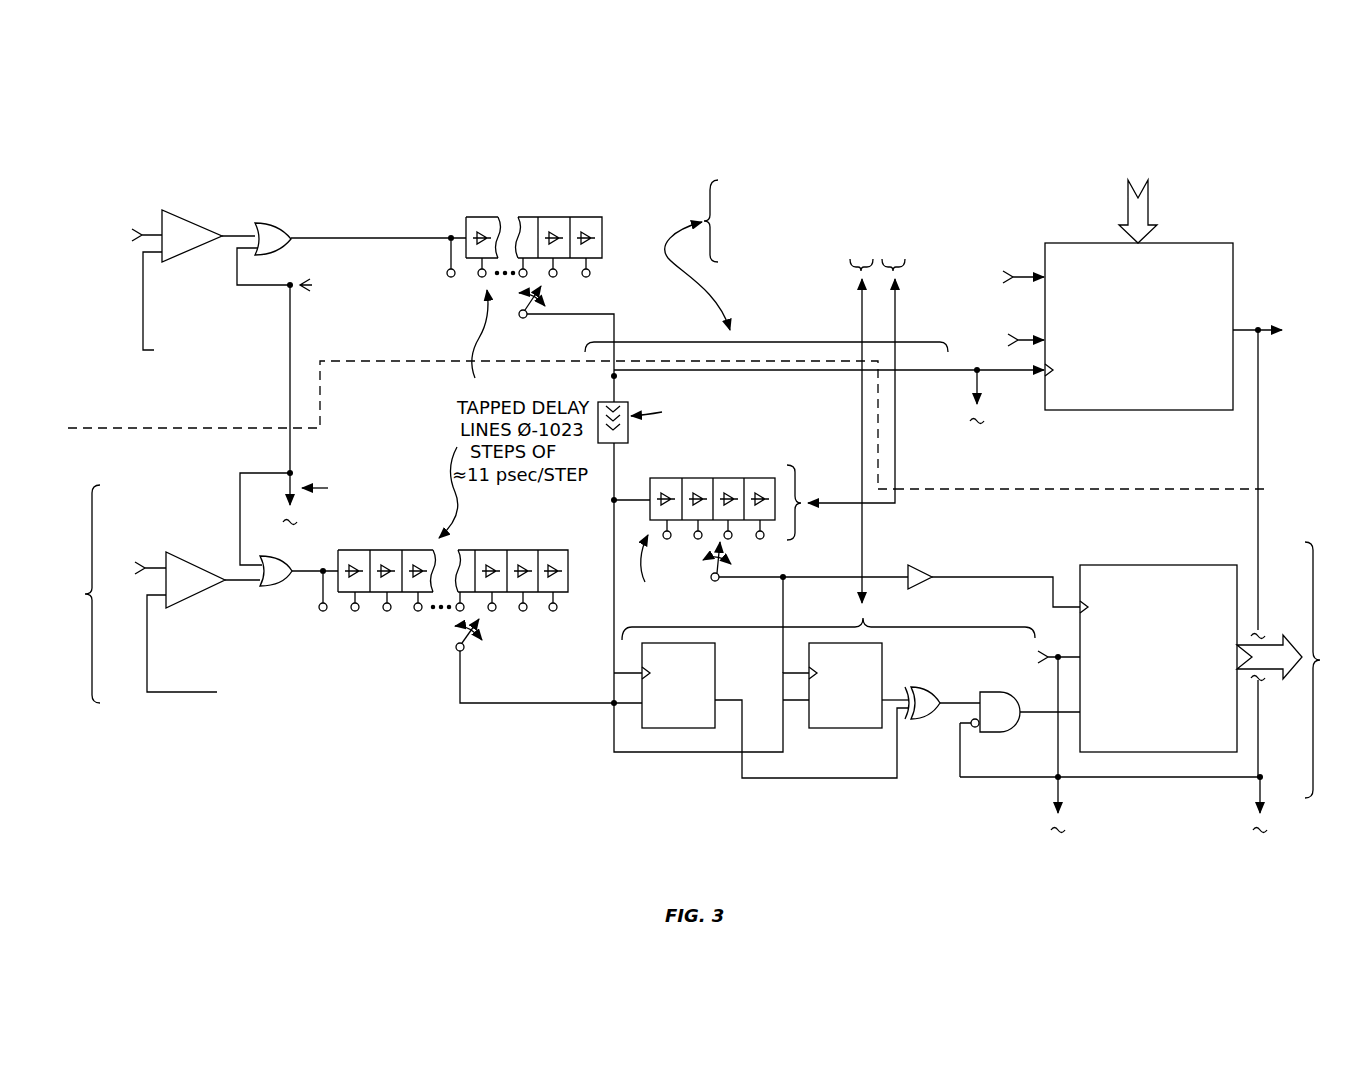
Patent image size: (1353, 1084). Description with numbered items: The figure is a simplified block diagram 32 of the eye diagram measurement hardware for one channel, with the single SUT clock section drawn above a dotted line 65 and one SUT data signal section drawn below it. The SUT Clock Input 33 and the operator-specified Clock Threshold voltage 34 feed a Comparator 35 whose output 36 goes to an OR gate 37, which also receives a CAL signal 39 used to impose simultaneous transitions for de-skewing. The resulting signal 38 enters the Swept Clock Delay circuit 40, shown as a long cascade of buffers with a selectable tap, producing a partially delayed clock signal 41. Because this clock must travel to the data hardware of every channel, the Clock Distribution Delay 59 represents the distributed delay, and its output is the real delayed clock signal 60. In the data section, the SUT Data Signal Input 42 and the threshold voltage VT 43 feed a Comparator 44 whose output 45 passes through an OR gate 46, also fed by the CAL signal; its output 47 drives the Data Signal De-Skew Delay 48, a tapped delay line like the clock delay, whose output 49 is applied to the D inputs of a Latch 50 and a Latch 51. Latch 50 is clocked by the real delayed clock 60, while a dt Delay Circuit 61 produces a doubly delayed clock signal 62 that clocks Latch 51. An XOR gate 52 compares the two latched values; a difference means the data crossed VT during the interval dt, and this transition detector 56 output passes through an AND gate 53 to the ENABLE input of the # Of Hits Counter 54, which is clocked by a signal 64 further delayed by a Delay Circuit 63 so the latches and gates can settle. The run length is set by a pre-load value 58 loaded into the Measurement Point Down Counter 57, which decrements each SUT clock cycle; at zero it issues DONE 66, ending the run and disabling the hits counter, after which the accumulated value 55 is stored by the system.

The simplified block diagram 32 is at (850, 146).
The SUT Clock Input 33 is at (121, 203).
The Clock Threshold voltage 34 is at (143, 300).
The Comparator 35 is at (193, 222).
The comparator output 36 is at (242, 235).
The OR gate 37 is at (273, 223).
The OR gate output signal 38 is at (333, 238).
The CAL signal 39 is at (290, 325).
The Swept Clock Delay circuit 40 is at (575, 209).
The partially delayed clock signal 41 is at (564, 316).
The SUT Data Signal Input 42 is at (152, 568).
The data threshold voltage VT 43 is at (147, 645).
The Comparator 44 is at (212, 572).
The comparator output 45 is at (232, 583).
The OR gate 46 is at (268, 589).
The OR gate output 47 is at (305, 575).
The Data Signal De-Skew Delay 48 is at (563, 543).
The delayed data signal output 49 is at (512, 705).
The Latch 50 is at (715, 662).
The Latch 51 is at (882, 662).
The XOR gate 52 is at (919, 722).
The AND gate 53 is at (1000, 734).
The # Of Hits Counter 54 is at (1158, 563).
The accumulated value 55 is at (1290, 636).
The transition detector 56 is at (828, 410).
The Measurement Point Down Counter 57 is at (1143, 412).
The pre-load value 58 is at (1148, 200).
The Clock Distribution Delay 59 is at (630, 435).
The real delayed clock signal 60 is at (614, 588).
The dt Delay Circuit 61 is at (760, 470).
The doubly delayed clock signal 62 is at (782, 598).
The Delay Circuit 63 is at (924, 590).
The counter clock signal 64 is at (993, 575).
The dotted line 65 is at (100, 427).
The DONE signal 66 is at (1259, 385).